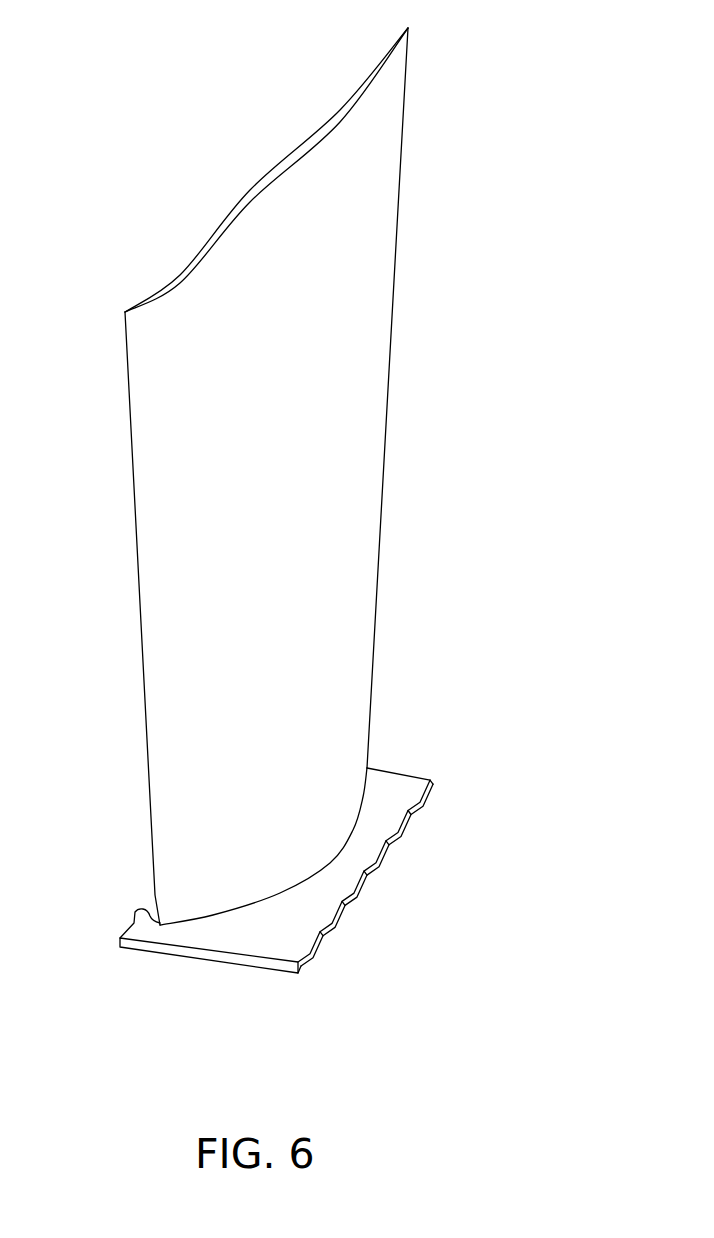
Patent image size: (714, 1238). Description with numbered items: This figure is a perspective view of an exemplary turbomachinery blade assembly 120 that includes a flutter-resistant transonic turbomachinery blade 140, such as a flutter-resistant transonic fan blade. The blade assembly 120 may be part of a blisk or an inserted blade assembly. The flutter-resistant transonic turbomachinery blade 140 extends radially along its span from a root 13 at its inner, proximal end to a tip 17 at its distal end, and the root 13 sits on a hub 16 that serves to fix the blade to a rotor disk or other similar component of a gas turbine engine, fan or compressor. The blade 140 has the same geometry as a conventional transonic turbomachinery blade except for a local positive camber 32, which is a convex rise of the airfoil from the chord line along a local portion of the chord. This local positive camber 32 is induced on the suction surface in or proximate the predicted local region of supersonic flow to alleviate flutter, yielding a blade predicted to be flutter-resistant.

The turbomachinery blade assembly 120 is at (313, 476).
The tip 17 is at (125, 312).
The local positive camber 32 is at (180, 277).
The flutter-resistant transonic turbomachinery blade 140 is at (378, 617).
The hub 16 is at (263, 850).
The root 13 is at (148, 912).